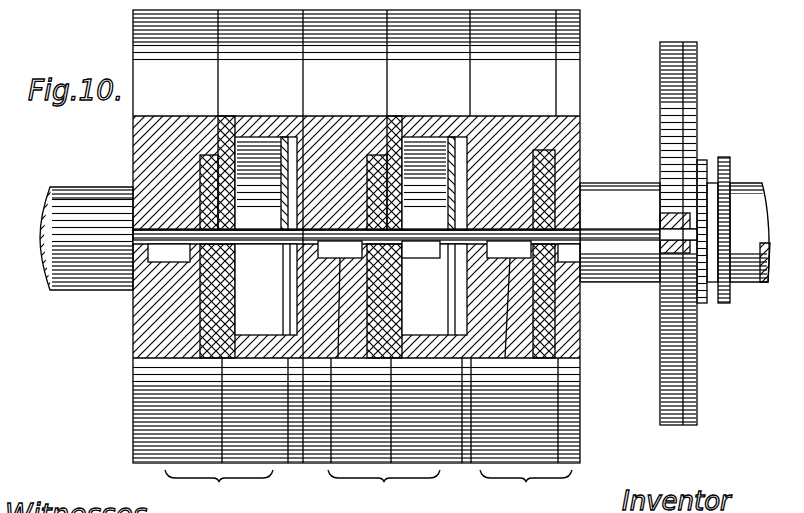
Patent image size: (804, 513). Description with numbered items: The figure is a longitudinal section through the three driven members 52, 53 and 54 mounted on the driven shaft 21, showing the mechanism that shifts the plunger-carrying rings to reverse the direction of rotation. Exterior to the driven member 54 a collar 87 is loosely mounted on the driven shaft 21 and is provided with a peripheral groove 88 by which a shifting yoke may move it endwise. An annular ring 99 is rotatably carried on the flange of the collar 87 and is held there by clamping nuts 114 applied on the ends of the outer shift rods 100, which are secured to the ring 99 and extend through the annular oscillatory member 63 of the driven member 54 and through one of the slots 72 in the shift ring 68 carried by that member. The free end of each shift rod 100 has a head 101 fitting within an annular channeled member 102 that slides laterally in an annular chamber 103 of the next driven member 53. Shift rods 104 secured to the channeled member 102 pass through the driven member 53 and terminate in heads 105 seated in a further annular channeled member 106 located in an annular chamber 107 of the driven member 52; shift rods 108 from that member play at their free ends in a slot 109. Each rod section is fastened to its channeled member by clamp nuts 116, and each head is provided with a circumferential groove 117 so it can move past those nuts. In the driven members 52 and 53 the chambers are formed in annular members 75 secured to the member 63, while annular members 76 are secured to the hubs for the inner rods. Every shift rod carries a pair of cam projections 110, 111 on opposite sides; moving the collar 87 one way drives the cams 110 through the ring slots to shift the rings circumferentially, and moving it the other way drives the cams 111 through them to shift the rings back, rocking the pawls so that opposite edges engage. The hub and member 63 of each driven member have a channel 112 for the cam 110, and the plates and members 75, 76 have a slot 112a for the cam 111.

The annular oscillatory member 63 is at (133, 131).
The shift ring 68 is at (213, 155).
The annular member 76 is at (272, 236).
The annular member 75 is at (290, 465).
The driven member 52 is at (219, 487).
The driven member 53 is at (384, 485).
The driven member 54 is at (526, 485).
The slot 109 is at (140, 237).
The driven shaft 21 is at (745, 186).
The annular ring 99 is at (669, 42).
The clamping nuts 114 is at (693, 90).
The peripheral groove 88 is at (703, 162).
The collar 87 is at (724, 160).
The shift rods 100 is at (627, 228).
The slots 72 is at (583, 283).
The cam projection 111 is at (416, 213).
The recess or channel 112 is at (163, 263).
The slot 112a is at (626, 295).
The cam projection 110 is at (372, 247).
The head 105 is at (283, 197).
The shift rods 108 is at (265, 229).
The annular channeled member 106 is at (283, 263).
The clamp nuts 116 is at (283, 286).
The annular chamber 107 is at (283, 300).
The circumferential groove 117 is at (451, 186).
The shift rods 104 is at (434, 228).
The annular channeled member 102 is at (434, 289).
The annular chamber 103 is at (448, 280).
The head 101 is at (432, 303).